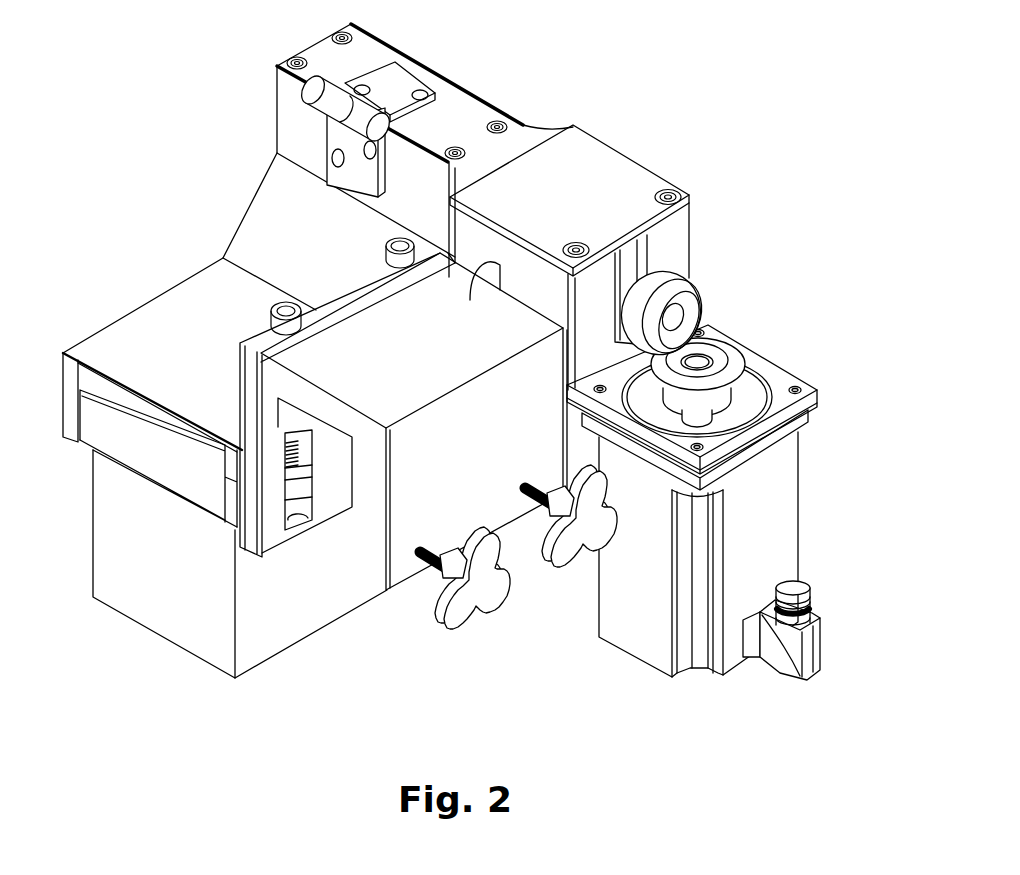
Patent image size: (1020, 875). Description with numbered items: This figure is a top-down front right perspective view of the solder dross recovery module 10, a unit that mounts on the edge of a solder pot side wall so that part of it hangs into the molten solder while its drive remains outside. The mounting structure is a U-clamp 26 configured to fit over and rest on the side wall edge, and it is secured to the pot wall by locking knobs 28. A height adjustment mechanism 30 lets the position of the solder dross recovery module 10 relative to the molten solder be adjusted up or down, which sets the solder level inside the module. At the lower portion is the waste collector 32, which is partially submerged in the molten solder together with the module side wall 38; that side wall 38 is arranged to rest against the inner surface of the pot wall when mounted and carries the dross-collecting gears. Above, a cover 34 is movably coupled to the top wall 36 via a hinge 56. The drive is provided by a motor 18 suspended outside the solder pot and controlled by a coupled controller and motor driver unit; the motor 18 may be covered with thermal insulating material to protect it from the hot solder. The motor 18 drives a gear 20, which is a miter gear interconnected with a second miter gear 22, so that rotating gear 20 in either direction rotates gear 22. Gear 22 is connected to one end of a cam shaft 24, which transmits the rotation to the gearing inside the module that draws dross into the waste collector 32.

The solder dross recovery module 10 is at (745, 43).
The motor 18 is at (770, 523).
The gear 20 is at (735, 360).
The gear 22 is at (683, 282).
The cam shaft 24 is at (626, 281).
The U-clamp 26 is at (371, 556).
The locking knobs 28 is at (603, 550).
The height adjustment mechanism 30 is at (292, 323).
The waste collector 32 is at (150, 577).
The cover 34 is at (203, 322).
The top wall 36 is at (472, 110).
The side wall 38 is at (487, 247).
The hinge 56 is at (393, 79).